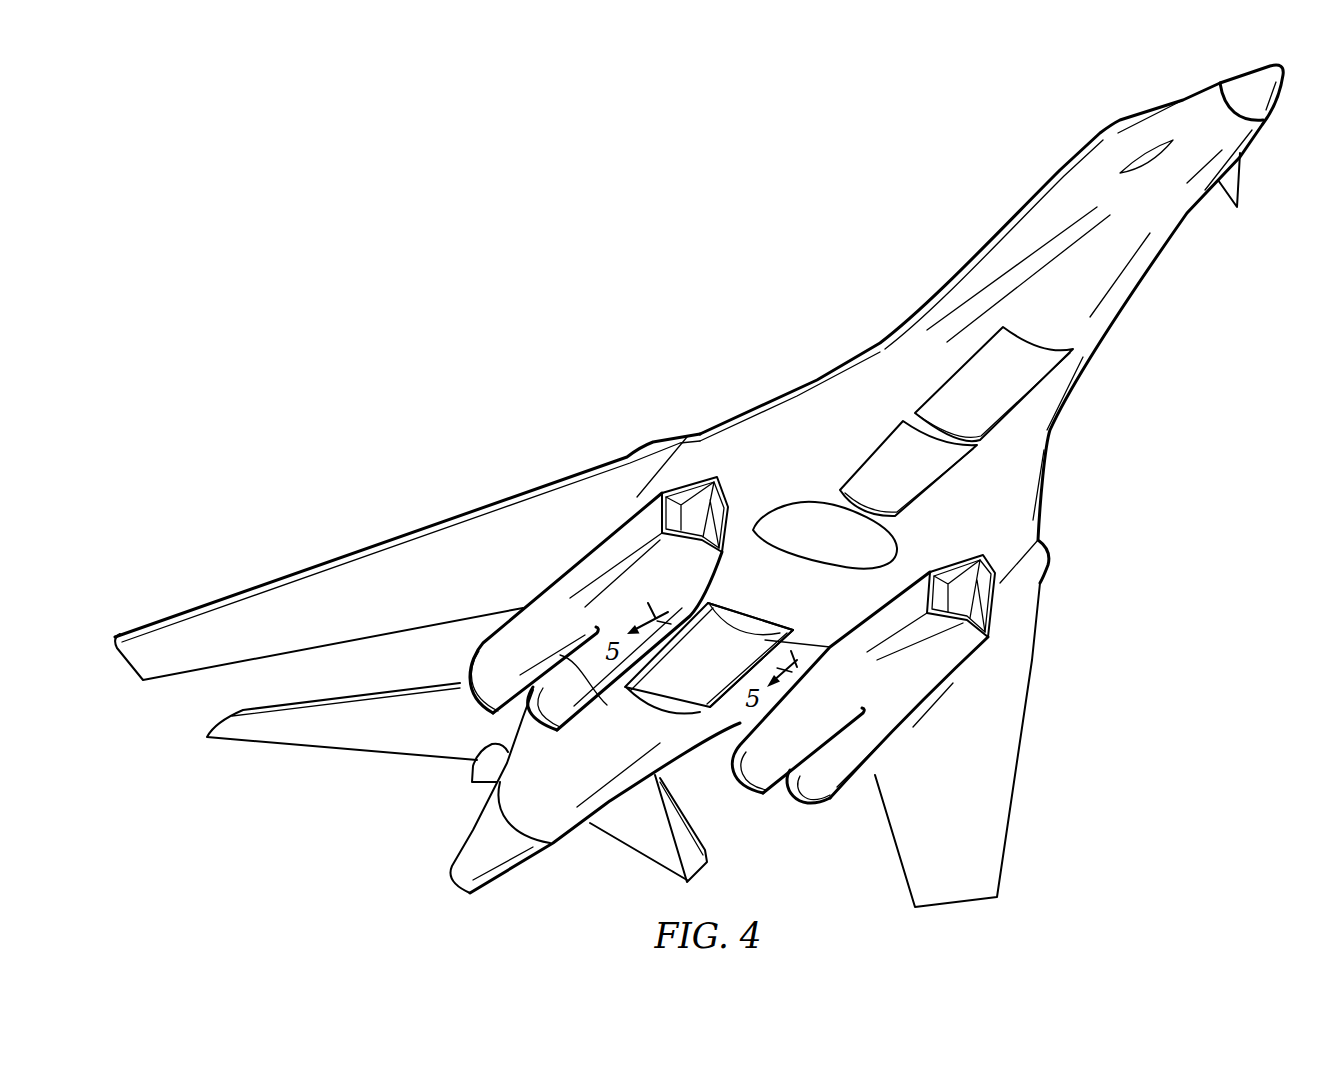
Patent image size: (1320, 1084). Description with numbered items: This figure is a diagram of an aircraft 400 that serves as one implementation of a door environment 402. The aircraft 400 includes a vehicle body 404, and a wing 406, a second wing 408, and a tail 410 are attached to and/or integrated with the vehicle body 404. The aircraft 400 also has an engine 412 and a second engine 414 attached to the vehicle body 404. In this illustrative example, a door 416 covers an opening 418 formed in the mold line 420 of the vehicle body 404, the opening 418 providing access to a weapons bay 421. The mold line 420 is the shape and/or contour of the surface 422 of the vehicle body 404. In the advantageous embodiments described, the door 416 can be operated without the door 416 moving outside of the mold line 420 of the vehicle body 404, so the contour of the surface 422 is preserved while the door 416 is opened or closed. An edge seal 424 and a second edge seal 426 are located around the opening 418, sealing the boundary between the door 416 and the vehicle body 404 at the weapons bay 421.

The aircraft 400 is at (347, 538).
The door environment 402 is at (677, 727).
The vehicle body 404 is at (823, 373).
The wing 406 is at (412, 535).
The wing 408 is at (1022, 737).
The tail 410 is at (338, 748).
The engine 412 is at (540, 607).
The engine 414 is at (880, 743).
The door 416 is at (730, 633).
The opening 418 is at (762, 623).
The mold line 420 is at (650, 707).
The weapons bay 421 is at (721, 658).
The surface 422 is at (607, 705).
The edge seal 424 is at (680, 637).
The edge seal 426 is at (765, 640).